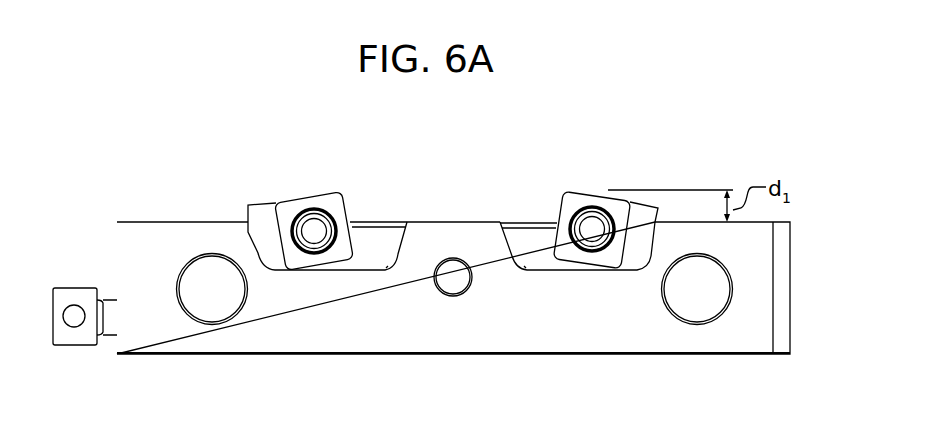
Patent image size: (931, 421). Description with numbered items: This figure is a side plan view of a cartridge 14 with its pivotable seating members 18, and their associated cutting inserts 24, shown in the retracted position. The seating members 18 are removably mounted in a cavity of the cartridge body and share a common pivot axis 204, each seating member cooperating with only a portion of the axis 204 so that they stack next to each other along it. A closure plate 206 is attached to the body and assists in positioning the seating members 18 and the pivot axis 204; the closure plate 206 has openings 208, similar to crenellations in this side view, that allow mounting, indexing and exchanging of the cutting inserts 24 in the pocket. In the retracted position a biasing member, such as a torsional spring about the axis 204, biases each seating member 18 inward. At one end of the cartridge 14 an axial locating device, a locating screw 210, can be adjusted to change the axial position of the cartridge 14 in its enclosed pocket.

The cartridge 14 is at (534, 140).
The pivotable seating member 18 is at (370, 240).
The cutting insert 24 is at (312, 194).
The pivot axis 204 is at (450, 283).
The closure plate 206 is at (163, 253).
The opening 208 is at (374, 270).
The locating screw 210 is at (78, 288).